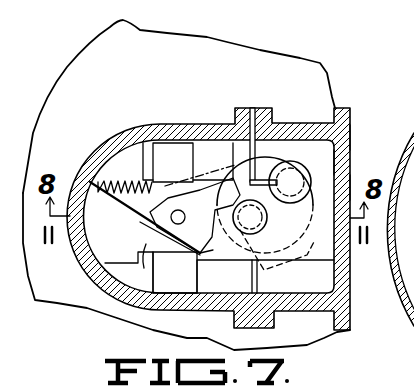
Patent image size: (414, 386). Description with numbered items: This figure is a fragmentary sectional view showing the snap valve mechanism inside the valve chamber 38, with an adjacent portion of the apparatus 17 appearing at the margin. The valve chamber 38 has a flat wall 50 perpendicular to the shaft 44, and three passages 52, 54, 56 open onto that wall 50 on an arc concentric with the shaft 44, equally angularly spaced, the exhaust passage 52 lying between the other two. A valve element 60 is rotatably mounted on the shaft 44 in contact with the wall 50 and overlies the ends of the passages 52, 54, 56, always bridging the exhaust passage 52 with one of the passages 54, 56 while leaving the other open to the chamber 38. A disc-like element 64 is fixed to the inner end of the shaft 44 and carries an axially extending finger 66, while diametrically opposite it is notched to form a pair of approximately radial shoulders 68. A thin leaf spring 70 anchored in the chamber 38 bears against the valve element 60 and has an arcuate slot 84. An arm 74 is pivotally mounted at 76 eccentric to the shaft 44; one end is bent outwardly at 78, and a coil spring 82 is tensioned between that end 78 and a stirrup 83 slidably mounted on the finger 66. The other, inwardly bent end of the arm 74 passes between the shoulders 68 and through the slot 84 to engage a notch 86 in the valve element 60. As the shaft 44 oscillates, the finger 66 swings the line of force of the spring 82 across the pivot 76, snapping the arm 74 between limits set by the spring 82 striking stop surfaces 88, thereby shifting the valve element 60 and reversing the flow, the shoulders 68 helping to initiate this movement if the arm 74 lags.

The adjacent casing wall 17 is at (307, 199).
The valve chamber 38 is at (173, 130).
The shaft 44 is at (244, 223).
The flat wall 50 is at (280, 142).
The exhaust passage 52 is at (354, 183).
The passage 54 is at (292, 262).
The passage 56 is at (350, 139).
The valve element 60 is at (350, 160).
The disc-like element 64 is at (235, 160).
The finger 66 is at (303, 157).
The shoulders 68 is at (200, 170).
The leaf spring 70 is at (265, 276).
The arm 74 is at (140, 210).
The pivot 76 is at (157, 226).
The outwardly bent end 78 is at (80, 173).
The coil spring 82 is at (127, 133).
The stirrup 83 is at (258, 122).
The arcuate slot 84 is at (175, 272).
The notch 86 is at (193, 250).
The stop surfaces 88 is at (150, 182).